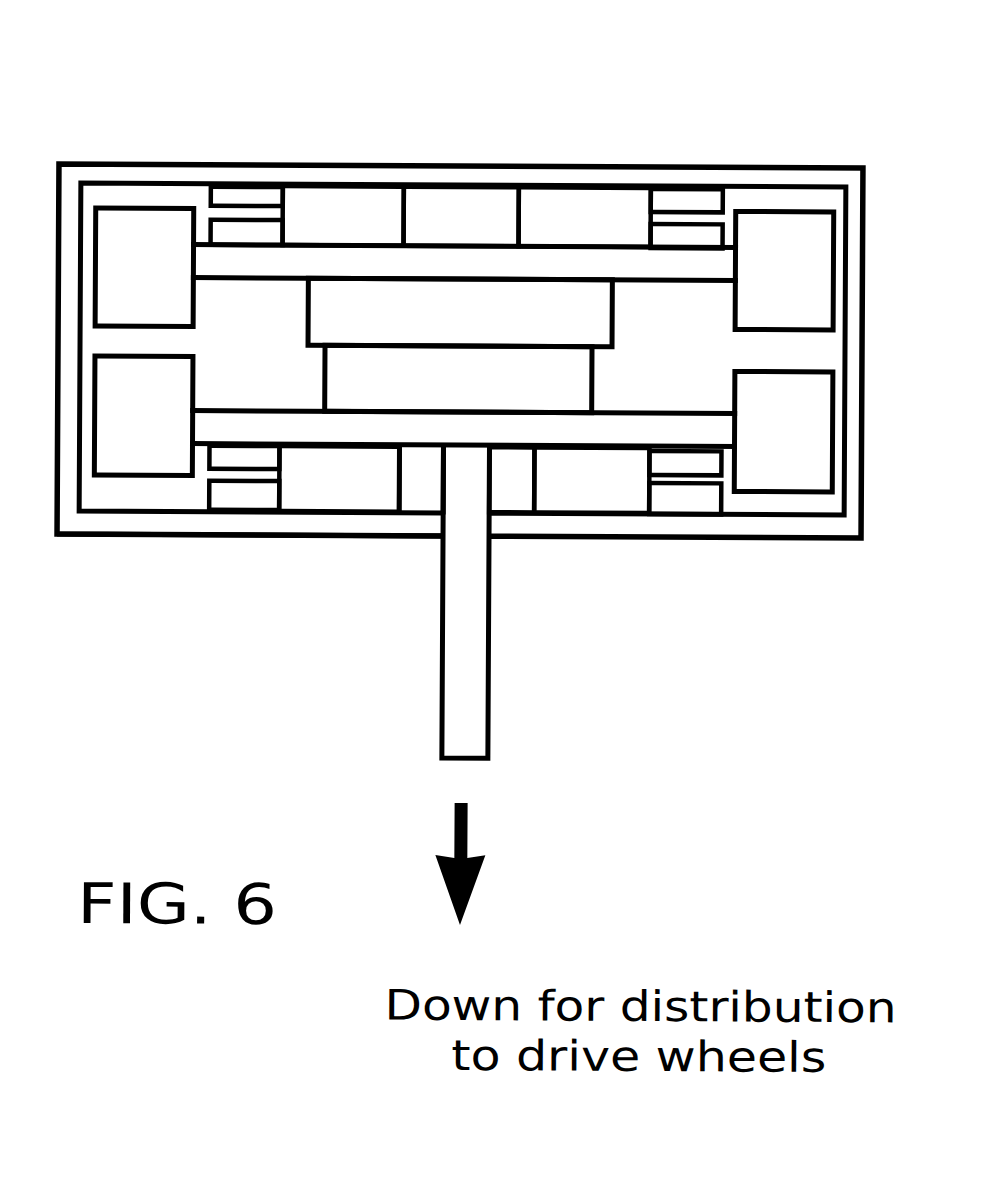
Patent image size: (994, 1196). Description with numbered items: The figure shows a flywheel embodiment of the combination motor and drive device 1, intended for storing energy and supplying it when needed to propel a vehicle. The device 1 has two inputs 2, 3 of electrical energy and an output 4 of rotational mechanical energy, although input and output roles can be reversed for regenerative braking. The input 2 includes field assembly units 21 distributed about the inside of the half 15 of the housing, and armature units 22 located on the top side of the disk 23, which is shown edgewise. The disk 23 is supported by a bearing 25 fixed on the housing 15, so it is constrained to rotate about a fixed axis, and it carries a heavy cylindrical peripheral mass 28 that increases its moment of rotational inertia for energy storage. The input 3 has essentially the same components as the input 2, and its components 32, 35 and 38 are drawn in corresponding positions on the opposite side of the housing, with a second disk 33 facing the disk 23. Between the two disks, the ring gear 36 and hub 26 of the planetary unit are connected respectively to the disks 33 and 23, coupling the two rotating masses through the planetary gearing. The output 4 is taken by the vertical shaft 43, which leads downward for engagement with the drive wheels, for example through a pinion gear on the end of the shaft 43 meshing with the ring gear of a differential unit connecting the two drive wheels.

The combination motor and drive device 1 is at (471, 73).
The input 2 is at (822, 570).
The input 3 is at (828, 128).
The output 4 is at (538, 757).
The housing half 15 is at (113, 535).
The field assembly units 21 is at (212, 491).
The armature units 22 is at (282, 453).
The disk 23 is at (333, 447).
The bearing 25 is at (535, 482).
The hub 26 is at (593, 379).
The heavy cylindrical peripheral mass 28 is at (800, 492).
The input shaft bearing 32 is at (283, 238).
The disk 33 is at (355, 243).
The clutch block 35 is at (524, 210).
The ring gear 36 is at (612, 313).
The right upper bearing block 38 is at (773, 208).
The vertical shaft 43 is at (443, 633).